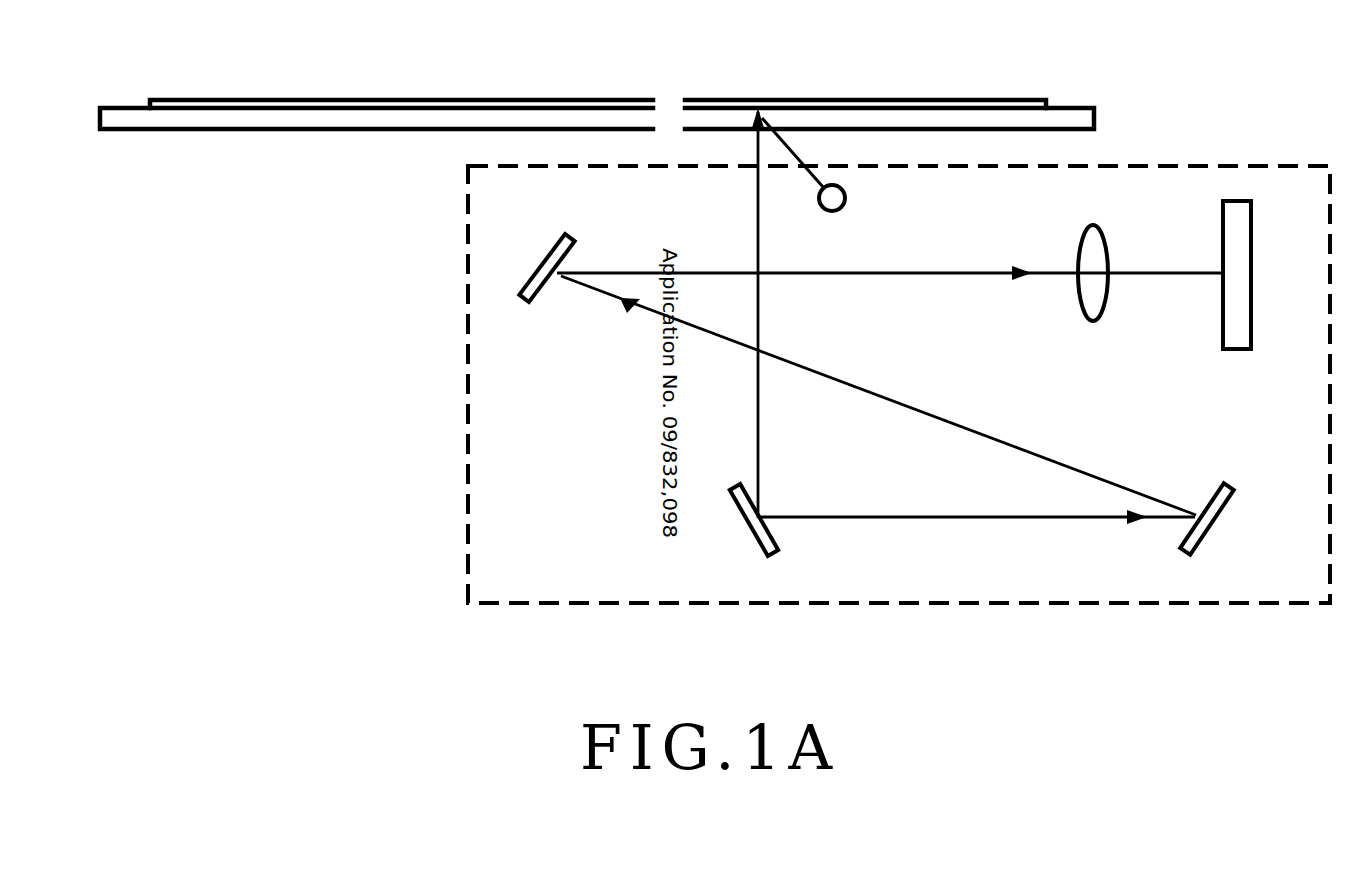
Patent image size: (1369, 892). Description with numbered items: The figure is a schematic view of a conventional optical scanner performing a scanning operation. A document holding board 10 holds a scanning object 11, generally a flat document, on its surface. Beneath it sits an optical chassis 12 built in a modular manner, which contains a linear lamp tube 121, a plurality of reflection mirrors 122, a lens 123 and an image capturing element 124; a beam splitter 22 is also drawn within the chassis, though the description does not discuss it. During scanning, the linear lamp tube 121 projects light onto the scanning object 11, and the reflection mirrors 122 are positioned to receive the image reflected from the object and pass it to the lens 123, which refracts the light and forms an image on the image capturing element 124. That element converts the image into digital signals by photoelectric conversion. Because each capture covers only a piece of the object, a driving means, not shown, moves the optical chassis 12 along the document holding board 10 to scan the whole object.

The document holding board 10 is at (125, 131).
The scanning object 11 is at (250, 99).
The optical chassis 12 is at (466, 500).
The beam splitter 22 is at (750, 532).
The linear lamp tube 121 is at (841, 209).
The reflection mirrors 122 is at (531, 300).
The lens 123 is at (1093, 322).
The image capturing element 124 is at (1238, 343).